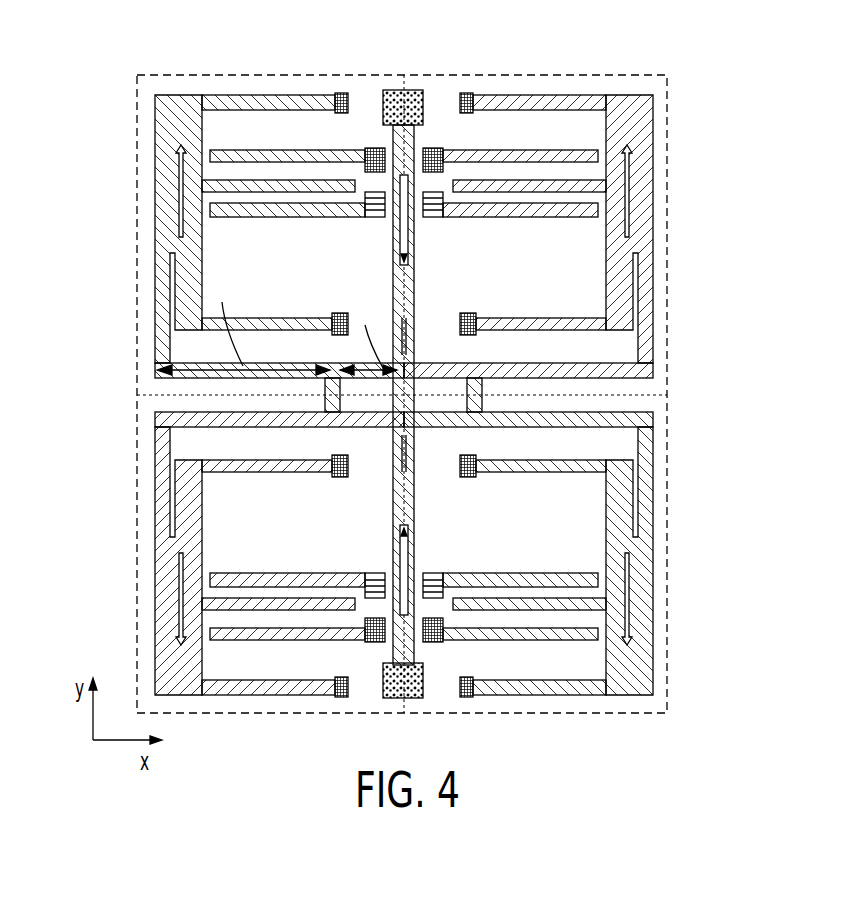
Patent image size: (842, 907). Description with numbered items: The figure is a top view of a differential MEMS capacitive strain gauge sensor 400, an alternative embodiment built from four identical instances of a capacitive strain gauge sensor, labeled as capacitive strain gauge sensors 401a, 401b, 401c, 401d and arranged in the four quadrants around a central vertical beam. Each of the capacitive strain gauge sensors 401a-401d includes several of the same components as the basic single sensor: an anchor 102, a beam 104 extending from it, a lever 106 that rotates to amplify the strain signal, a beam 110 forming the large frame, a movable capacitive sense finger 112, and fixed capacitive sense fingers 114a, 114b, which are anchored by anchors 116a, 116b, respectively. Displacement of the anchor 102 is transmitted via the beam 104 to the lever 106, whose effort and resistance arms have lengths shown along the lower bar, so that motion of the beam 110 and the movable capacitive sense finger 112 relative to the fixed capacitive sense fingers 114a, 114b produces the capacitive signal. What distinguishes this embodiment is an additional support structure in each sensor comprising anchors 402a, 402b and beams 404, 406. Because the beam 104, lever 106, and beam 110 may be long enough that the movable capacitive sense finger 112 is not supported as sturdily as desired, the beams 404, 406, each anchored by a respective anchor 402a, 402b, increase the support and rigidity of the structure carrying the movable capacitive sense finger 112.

The differential MEMS capacitive strain gauge sensor 400 is at (125, 79).
The capacitive strain gauge sensor 401a is at (233, 208).
The capacitive strain gauge sensor 401b is at (135, 595).
The capacitive strain gauge sensor 401c is at (672, 252).
The capacitive strain gauge sensor 401d is at (670, 545).
The anchor 402a is at (338, 95).
The anchor 402b is at (340, 313).
The beam 404 is at (228, 97).
The beam 406 is at (272, 325).
The anchor 102 is at (408, 90).
The beam 104 is at (400, 233).
The lever 106 is at (155, 358).
The beam 110 is at (160, 218).
The movable capacitive sense finger 112 is at (258, 182).
The fixed capacitive sense finger 114a is at (228, 214).
The fixed capacitive sense finger 114b is at (272, 97).
The anchor 116a is at (381, 150).
The anchor 116b is at (368, 212).